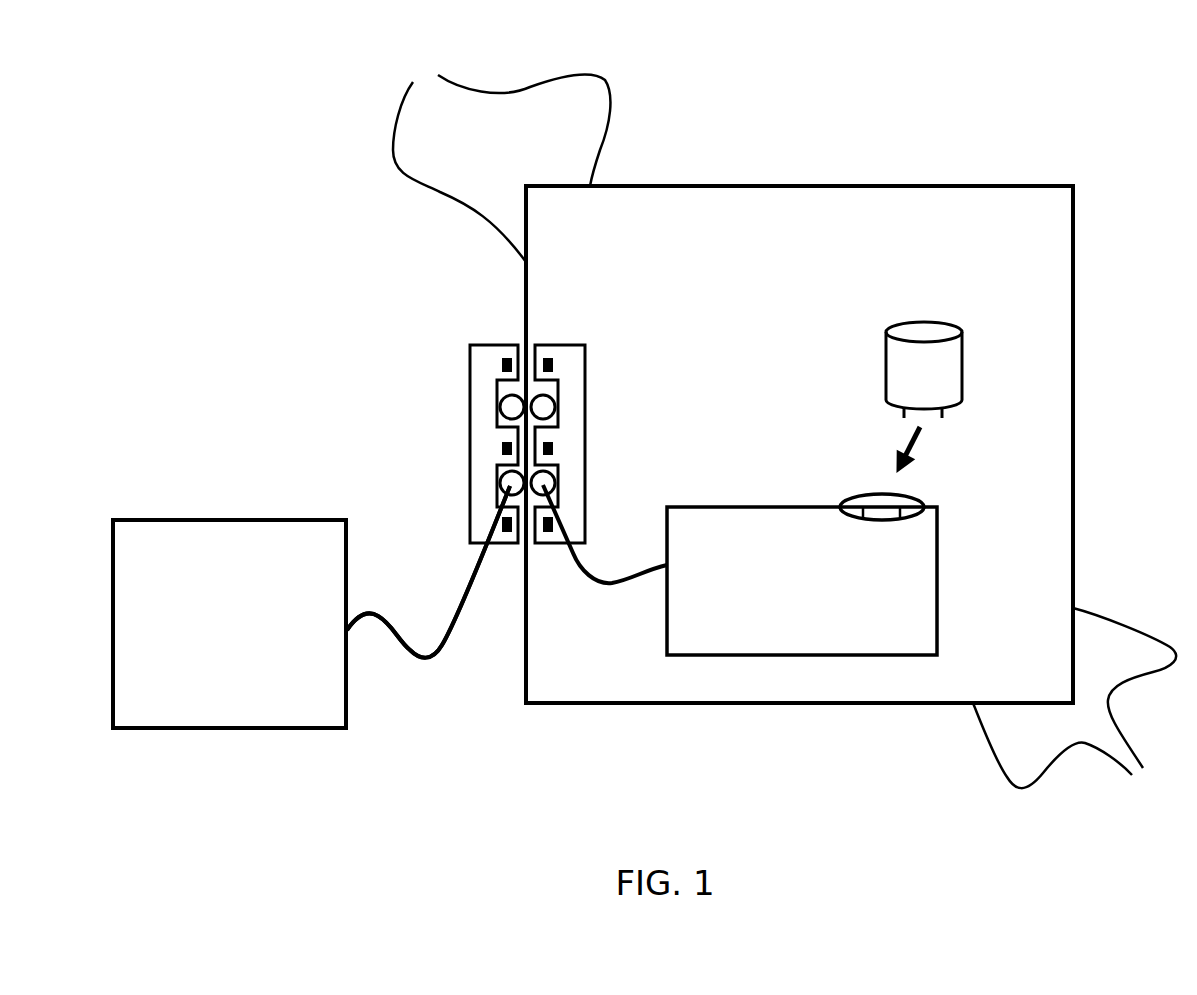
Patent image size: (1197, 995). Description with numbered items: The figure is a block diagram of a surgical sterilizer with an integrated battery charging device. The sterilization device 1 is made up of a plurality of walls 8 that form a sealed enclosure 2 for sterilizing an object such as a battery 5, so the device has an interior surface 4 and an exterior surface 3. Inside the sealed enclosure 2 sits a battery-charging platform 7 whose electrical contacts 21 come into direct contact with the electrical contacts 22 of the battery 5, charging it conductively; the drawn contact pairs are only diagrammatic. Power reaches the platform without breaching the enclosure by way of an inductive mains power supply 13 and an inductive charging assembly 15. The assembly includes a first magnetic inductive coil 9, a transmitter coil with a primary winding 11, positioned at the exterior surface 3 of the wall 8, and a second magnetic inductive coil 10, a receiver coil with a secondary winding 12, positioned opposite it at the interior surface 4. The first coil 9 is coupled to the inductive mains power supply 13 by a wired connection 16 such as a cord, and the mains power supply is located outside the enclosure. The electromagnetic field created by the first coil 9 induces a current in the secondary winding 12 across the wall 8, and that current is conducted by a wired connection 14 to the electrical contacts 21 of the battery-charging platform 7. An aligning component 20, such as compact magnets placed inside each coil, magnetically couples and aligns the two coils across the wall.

The sterilization device 1 is at (883, 730).
The sealed enclosure 2 is at (771, 399).
The exterior surface 3 is at (1086, 304).
The interior surface 4 is at (823, 201).
The battery 5 is at (915, 385).
The battery-charging platform 7 is at (796, 580).
The walls 8 is at (784, 431).
The first magnetic inductive coil 9 is at (448, 437).
The second magnetic inductive coil 10 is at (611, 376).
The primary winding 11 is at (512, 406).
The secondary winding 12 is at (543, 408).
The inductive mains power supply 13 is at (235, 728).
The wired connection 14 is at (583, 570).
The inductive charging assembly 15 is at (483, 632).
The wired connection 16 is at (450, 625).
The aligning component 20 is at (507, 365).
The electrical contacts 21 is at (907, 508).
The electrical contacts 22 is at (943, 418).